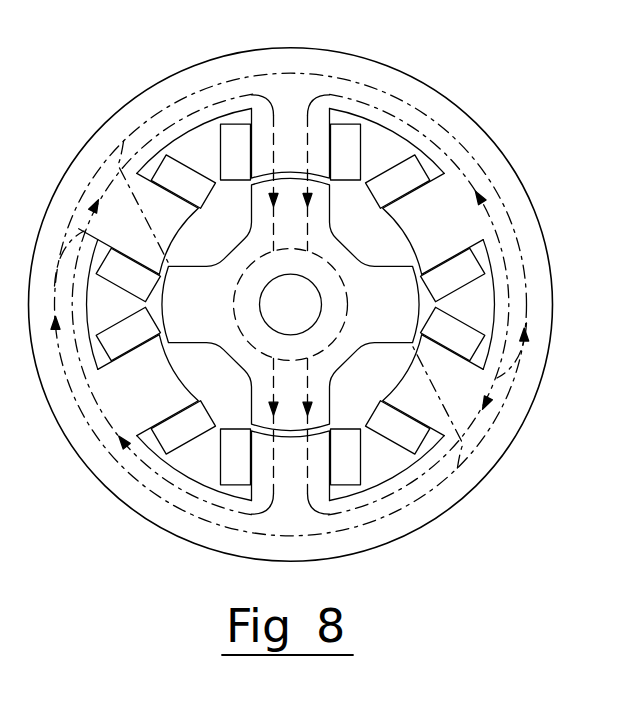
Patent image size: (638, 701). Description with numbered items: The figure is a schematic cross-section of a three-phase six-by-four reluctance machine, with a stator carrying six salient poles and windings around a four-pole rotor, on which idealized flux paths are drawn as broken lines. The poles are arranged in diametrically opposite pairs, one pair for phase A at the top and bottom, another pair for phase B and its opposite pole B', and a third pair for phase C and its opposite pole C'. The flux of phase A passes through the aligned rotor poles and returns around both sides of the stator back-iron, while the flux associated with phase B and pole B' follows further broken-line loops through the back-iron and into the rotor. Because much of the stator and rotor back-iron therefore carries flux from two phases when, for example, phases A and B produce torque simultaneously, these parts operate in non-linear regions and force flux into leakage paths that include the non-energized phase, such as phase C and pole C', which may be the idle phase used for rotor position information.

The phase A is at (290, 302).
The phase B is at (135, 221).
The phase B' (return pole of phase B) B' is at (446, 387).
The phase C is at (155, 380).
The phase C' (return pole of phase C) C' is at (425, 228).